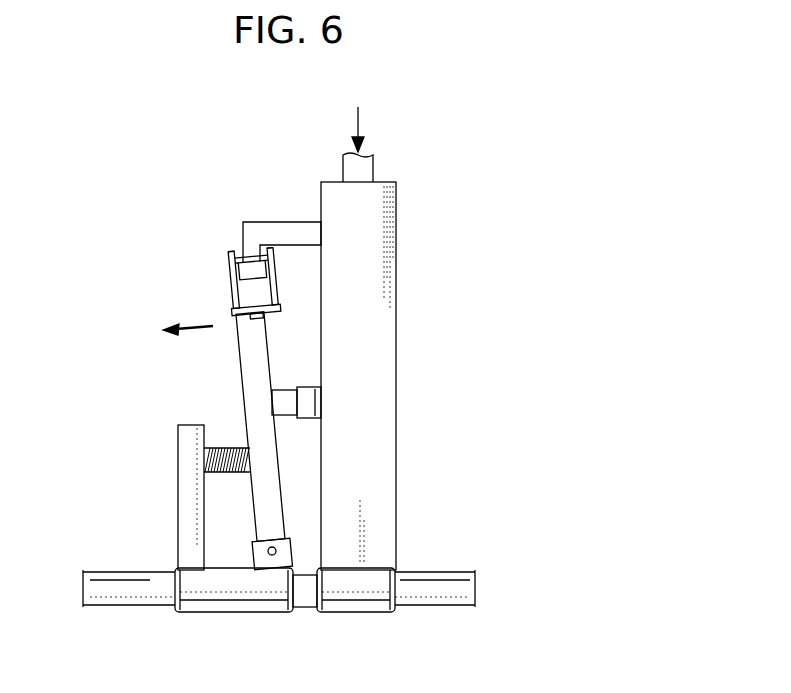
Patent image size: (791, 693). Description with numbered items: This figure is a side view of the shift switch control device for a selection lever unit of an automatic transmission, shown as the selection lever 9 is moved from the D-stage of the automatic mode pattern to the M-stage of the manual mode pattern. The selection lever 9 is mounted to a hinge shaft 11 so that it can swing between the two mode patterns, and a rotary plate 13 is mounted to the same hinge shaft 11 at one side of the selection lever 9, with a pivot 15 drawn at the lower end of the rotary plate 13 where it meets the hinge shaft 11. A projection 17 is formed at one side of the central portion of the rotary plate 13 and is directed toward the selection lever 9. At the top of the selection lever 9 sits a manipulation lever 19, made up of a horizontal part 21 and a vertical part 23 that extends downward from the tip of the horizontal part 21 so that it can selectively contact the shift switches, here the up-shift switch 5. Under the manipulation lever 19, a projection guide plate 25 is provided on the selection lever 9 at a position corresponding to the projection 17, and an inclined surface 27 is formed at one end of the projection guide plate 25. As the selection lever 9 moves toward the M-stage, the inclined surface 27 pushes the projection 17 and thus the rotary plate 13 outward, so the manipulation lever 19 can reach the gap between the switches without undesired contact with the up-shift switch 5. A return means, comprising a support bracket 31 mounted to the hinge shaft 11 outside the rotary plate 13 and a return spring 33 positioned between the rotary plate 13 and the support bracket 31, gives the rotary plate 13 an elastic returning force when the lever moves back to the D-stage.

The up-shift switch 5 is at (233, 304).
The selection lever 9 is at (373, 171).
The hinge shaft 11 is at (438, 582).
The rotary plate 13 is at (240, 349).
The pivot pin 15 is at (275, 556).
The projection 17 is at (288, 407).
The manipulation lever 19 is at (170, 205).
The horizontal part 21 is at (262, 231).
The vertical part 23 is at (250, 257).
The projection guide plate 25 is at (303, 380).
The inclined surface 27 is at (309, 387).
The support bracket 31 is at (183, 514).
The return spring 33 is at (225, 450).